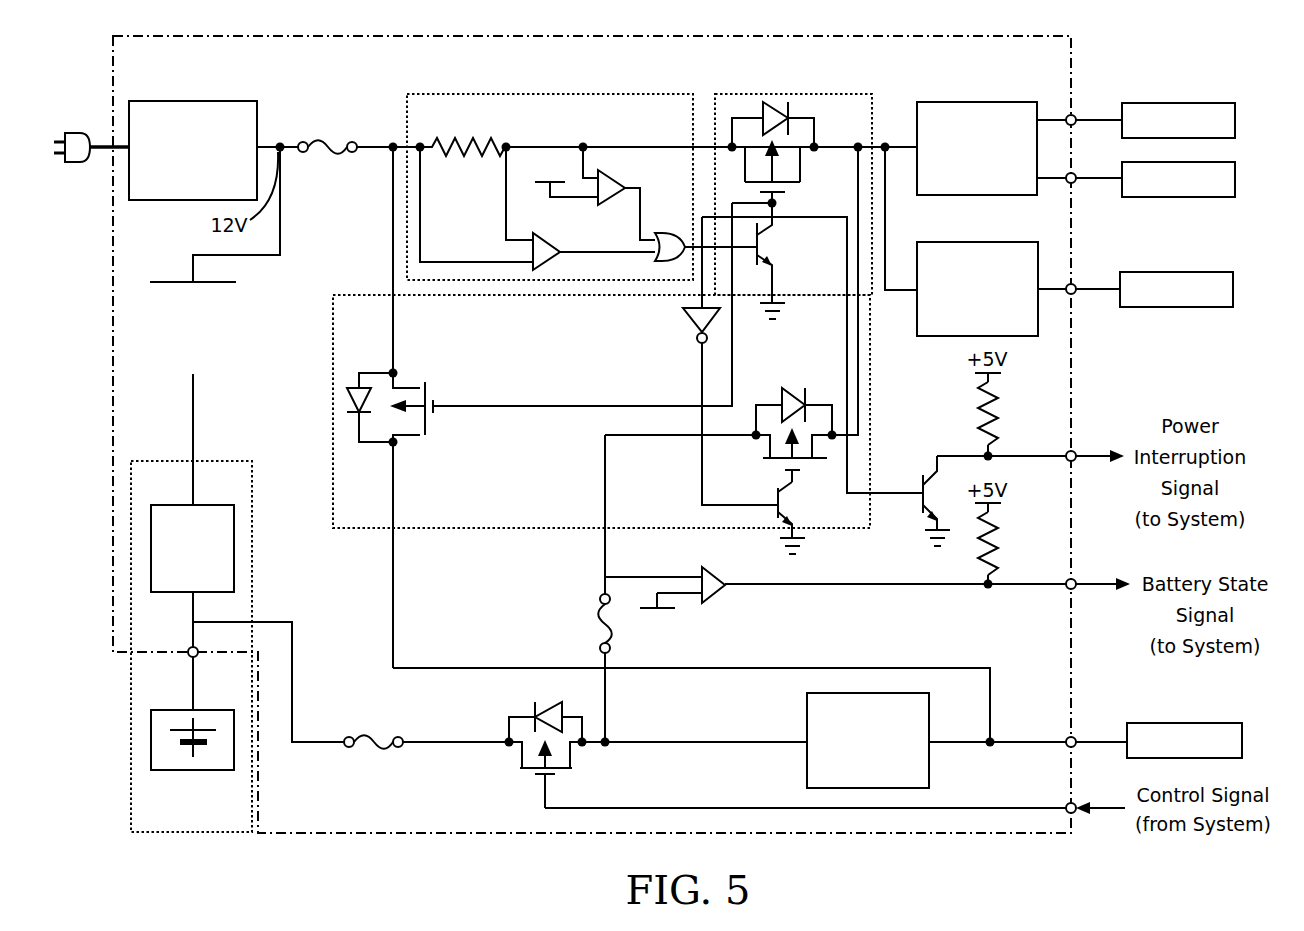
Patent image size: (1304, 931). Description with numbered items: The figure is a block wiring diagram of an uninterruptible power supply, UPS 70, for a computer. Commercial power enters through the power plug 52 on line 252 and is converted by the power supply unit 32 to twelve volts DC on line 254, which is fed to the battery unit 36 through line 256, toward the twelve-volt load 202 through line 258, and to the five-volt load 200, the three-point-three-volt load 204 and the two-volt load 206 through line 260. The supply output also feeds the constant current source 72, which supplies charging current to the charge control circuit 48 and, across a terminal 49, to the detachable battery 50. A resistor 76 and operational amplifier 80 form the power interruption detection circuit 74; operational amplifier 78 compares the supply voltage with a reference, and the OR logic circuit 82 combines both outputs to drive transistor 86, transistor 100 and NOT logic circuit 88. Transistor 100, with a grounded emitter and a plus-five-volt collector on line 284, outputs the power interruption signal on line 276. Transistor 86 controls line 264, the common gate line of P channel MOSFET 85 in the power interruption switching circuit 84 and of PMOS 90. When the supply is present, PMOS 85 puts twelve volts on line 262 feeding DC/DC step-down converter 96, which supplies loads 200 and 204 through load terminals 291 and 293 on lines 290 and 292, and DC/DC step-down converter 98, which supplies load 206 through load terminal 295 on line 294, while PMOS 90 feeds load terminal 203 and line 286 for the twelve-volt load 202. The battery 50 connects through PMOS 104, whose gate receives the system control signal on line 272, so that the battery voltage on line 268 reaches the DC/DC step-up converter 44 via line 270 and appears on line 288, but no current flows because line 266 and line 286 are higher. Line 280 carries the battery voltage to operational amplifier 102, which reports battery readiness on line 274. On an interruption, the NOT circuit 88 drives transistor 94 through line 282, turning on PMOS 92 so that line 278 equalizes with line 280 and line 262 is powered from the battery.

The power supply unit 32 is at (180, 101).
The battery unit 36 is at (207, 460).
The DC/DC step-up converter 44 is at (806, 727).
The charge control circuit 48 is at (200, 503).
The battery connector 49 is at (186, 656).
The battery 50 is at (175, 772).
The power plug 52 is at (72, 131).
The UPS 70 is at (1072, 393).
The constant current source 72 is at (245, 323).
The power interruption detection circuit 74 is at (550, 173).
The resistor 76 is at (440, 155).
The operational amplifier 78 is at (612, 178).
The operational amplifier 80 is at (543, 236).
The OR logic circuit 82 is at (668, 232).
The power interruption switching circuit 84 is at (751, 95).
The P channel MOSFET 85 is at (797, 185).
The transistor 86 is at (772, 243).
The NOT logic circuit 88 is at (697, 330).
The PMOS 90 is at (423, 425).
The PMOS 92 is at (810, 466).
The transistor 94 is at (778, 497).
The DC/DC step-down converter 96 is at (1000, 102).
The DC/DC step-down converter 98 is at (978, 242).
The transistor 100 is at (922, 508).
The operational amplifier 102 is at (710, 600).
The PMOS 104 is at (510, 760).
The 5 V load 200 is at (1200, 103).
The 12 V load 202 is at (1217, 722).
The load terminal 203 is at (1075, 737).
The 3.3 V load 204 is at (1215, 198).
The 2 V load 206 is at (1215, 272).
The line 252 is at (100, 152).
The line 254 is at (260, 146).
The line 256 is at (280, 198).
The line 258 is at (393, 270).
The line 260 is at (403, 143).
The line 262 is at (879, 143).
The line 264 is at (483, 405).
The line 266 is at (394, 495).
The line 268 is at (293, 678).
The line 270 is at (647, 740).
The line 272 is at (633, 807).
The line 274 is at (858, 586).
The line 276 is at (1017, 459).
The line 278 is at (862, 385).
The line 280 is at (605, 510).
The line 282 is at (702, 493).
The transistor collector line 284 is at (892, 490).
The line 286 is at (1033, 740).
The line 288 is at (945, 744).
The line 290 is at (1095, 115).
The load terminal 291 is at (1067, 116).
The line 292 is at (1093, 182).
The load terminal 293 is at (1067, 182).
The line 294 is at (1093, 294).
The load terminal 295 is at (1077, 284).